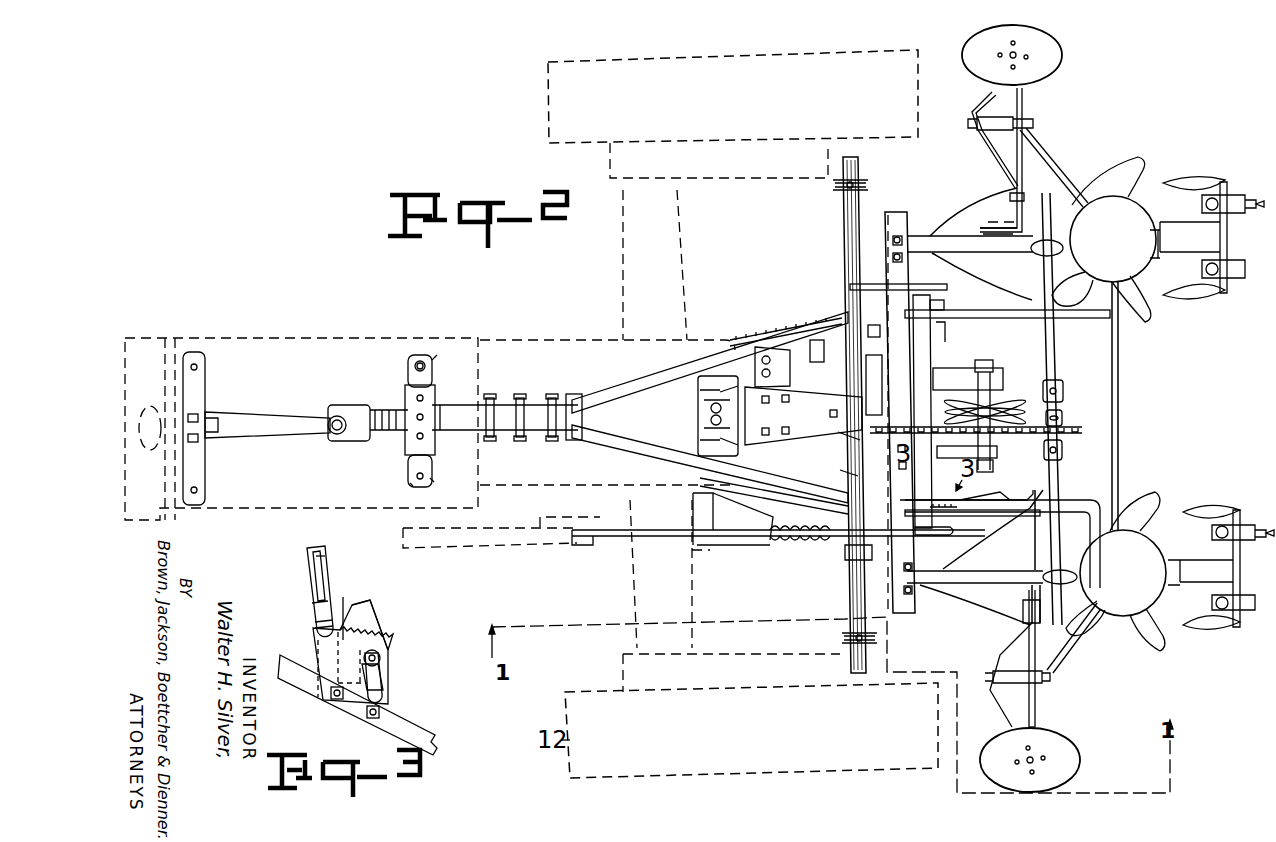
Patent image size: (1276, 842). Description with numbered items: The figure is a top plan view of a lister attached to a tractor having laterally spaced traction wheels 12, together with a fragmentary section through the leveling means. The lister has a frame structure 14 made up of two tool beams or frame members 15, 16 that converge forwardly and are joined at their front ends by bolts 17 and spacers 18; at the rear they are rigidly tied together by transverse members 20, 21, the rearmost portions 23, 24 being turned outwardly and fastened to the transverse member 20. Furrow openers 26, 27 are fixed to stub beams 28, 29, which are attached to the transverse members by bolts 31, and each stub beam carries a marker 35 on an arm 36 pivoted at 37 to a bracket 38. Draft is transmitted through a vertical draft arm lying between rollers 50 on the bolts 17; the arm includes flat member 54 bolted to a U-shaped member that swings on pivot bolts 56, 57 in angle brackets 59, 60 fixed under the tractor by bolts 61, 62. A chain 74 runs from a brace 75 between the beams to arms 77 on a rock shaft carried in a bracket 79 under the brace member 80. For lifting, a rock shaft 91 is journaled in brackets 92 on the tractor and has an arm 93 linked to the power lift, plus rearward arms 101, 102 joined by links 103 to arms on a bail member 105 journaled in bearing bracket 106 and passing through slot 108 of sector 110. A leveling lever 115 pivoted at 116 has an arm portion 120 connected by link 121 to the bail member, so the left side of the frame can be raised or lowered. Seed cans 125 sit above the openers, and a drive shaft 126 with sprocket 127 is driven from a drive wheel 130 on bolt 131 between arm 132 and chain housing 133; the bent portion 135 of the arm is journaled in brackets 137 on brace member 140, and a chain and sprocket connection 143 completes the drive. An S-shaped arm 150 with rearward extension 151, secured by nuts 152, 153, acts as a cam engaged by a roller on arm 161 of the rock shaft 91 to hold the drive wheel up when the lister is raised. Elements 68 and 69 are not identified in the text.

In FIG. 2, the traction wheels 12 is at (548, 99).
In FIG. 2, the frame structure 14 is at (1119, 372).
In FIG. 2, the frame member 15 is at (672, 381).
In FIG. 2, the frame member 16 is at (648, 449).
In FIG. 3, the frame member 16 is at (410, 732).
In FIG. 2, the bolts 17 is at (382, 405).
In FIG. 2, the spacers 18 is at (560, 410).
In FIG. 2, the transverse member 20 is at (1114, 441).
In FIG. 2, the transverse member 21 is at (899, 207).
In FIG. 2, the rearmost portion 23 is at (1097, 302).
In FIG. 2, the rearmost portion 24 is at (1096, 499).
In FIG. 2, the furrow opener 26 is at (962, 231).
In FIG. 2, the furrow opener 27 is at (990, 598).
In FIG. 2, the stub beam 28 is at (917, 240).
In FIG. 2, the stub beam 29 is at (972, 582).
In FIG. 2, the bolts 31 is at (890, 258).
In FIG. 2, the marker 35 is at (1050, 57).
In FIG. 2, the arm 36 is at (1036, 712).
In FIG. 2, the pivot 37 is at (1025, 98).
In FIG. 2, the bracket 38 is at (1040, 149).
In FIG. 2, the rollers 50 is at (366, 430).
In FIG. 2, the flat member 54 is at (406, 410).
In FIG. 2, the pivot bolt 56 is at (433, 462).
In FIG. 2, the pivot bolt 57 is at (436, 356).
In FIG. 2, the angle bracket 59 is at (433, 482).
In FIG. 2, the angle bracket 60 is at (421, 360).
In FIG. 2, the bolt 61 is at (412, 481).
In FIG. 2, the bolt 62 is at (409, 363).
In FIG. 2, the hitch plate 68 is at (268, 416).
In FIG. 2, the pivot pin 69 is at (342, 416).
In FIG. 2, the chain 74 is at (700, 421).
In FIG. 2, the brace 75 is at (699, 398).
In FIG. 2, the arms 77 is at (719, 400).
In FIG. 2, the bracket 79 is at (780, 373).
In FIG. 2, the brace member 80 is at (806, 440).
In FIG. 2, the rock shaft 91 is at (848, 270).
In FIG. 2, the brackets 92 is at (840, 178).
In FIG. 2, the arm 93 is at (851, 562).
In FIG. 2, the arm 101 is at (876, 289).
In FIG. 2, the arm 102 is at (880, 541).
In FIG. 3, the links 103 is at (366, 619).
In FIG. 2, the bail member 105 is at (926, 343).
In FIG. 3, the bail member 105 is at (380, 656).
In FIG. 2, the bearing bracket 106 is at (940, 315).
In FIG. 3, the slot 108 is at (386, 678).
In FIG. 3, the sector 110 is at (343, 608).
In FIG. 2, the leveling lever 115 is at (1020, 512).
In FIG. 3, the leveling lever 115 is at (306, 575).
In FIG. 2, the pivot 116 is at (962, 514).
In FIG. 3, the pivot 116 is at (331, 700).
In FIG. 3, the arm portion 120 is at (356, 705).
In FIG. 3, the link 121 is at (385, 662).
In FIG. 2, the seed can 125 is at (1116, 223).
In FIG. 2, the drive shaft 126 is at (1056, 348).
In FIG. 2, the sprocket 127 is at (1065, 430).
In FIG. 2, the drive wheel 130 is at (1006, 405).
In FIG. 2, the bolt 131 is at (979, 366).
In FIG. 2, the arm 132 is at (932, 500).
In FIG. 2, the chain housing 133 is at (947, 384).
In FIG. 2, the bent portion 135 is at (846, 465).
In FIG. 2, the brackets 137 is at (846, 444).
In FIG. 2, the brace member 140 is at (774, 495).
In FIG. 2, the chain and sprocket connection 143 is at (998, 440).
In FIG. 2, the S-shaped arm 150 is at (784, 338).
In FIG. 2, the rearward extension 151 is at (934, 368).
In FIG. 2, the nut 152 is at (886, 370).
In FIG. 2, the nut 153 is at (982, 356).
In FIG. 2, the arm 161 is at (831, 365).